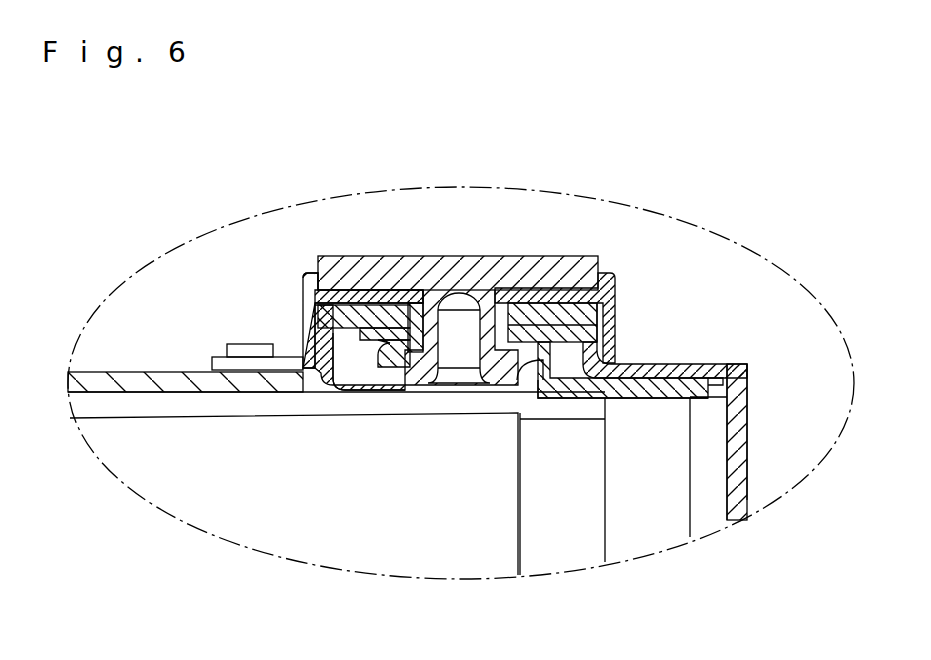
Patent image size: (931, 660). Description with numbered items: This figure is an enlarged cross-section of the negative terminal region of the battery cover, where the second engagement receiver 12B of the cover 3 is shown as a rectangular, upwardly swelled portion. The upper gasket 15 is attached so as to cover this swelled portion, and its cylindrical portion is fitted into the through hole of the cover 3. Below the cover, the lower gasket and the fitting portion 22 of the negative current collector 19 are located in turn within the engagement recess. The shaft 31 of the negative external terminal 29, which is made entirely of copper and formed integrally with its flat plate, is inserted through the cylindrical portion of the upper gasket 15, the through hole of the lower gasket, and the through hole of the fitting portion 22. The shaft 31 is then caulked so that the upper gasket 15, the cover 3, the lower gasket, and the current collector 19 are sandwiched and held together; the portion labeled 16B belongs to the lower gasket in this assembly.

The cover 3 is at (130, 372).
The negative external terminal 29 is at (455, 268).
The shaft 31 is at (500, 373).
The upper gasket 15 is at (610, 300).
The second engagement receiver 12B is at (592, 323).
The flange of member 16 16B is at (368, 340).
The fitting portion 22 is at (541, 345).
The negative current collector 19 is at (583, 530).